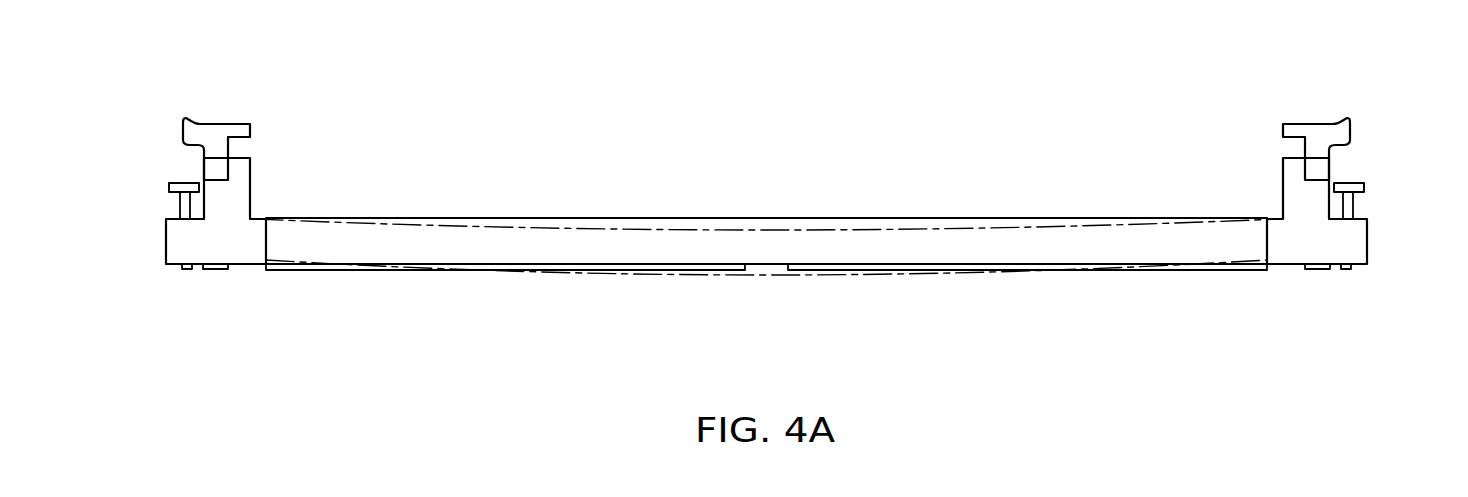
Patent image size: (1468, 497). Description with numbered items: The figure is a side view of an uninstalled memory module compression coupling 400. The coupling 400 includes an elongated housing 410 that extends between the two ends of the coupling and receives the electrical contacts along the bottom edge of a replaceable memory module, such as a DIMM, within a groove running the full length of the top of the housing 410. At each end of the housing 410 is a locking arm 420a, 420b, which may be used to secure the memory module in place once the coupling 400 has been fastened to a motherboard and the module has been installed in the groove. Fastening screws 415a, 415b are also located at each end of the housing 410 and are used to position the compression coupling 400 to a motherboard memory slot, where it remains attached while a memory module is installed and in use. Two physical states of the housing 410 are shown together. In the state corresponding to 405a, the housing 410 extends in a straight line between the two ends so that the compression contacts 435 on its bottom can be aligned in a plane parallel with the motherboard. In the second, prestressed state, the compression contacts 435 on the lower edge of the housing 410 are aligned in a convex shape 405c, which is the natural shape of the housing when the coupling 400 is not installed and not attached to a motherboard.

The memory module compression coupling 400 is at (703, 90).
The straight state of the housing 405a is at (246, 262).
The convex shape of the housing lower edge 405c is at (720, 276).
The housing 410 is at (1282, 345).
The fastening screw 415a is at (186, 181).
The fastening screw 415b is at (1350, 178).
The locking arm 420a is at (217, 123).
The locking arm 420b is at (1317, 123).
The compression contacts 435 is at (332, 271).